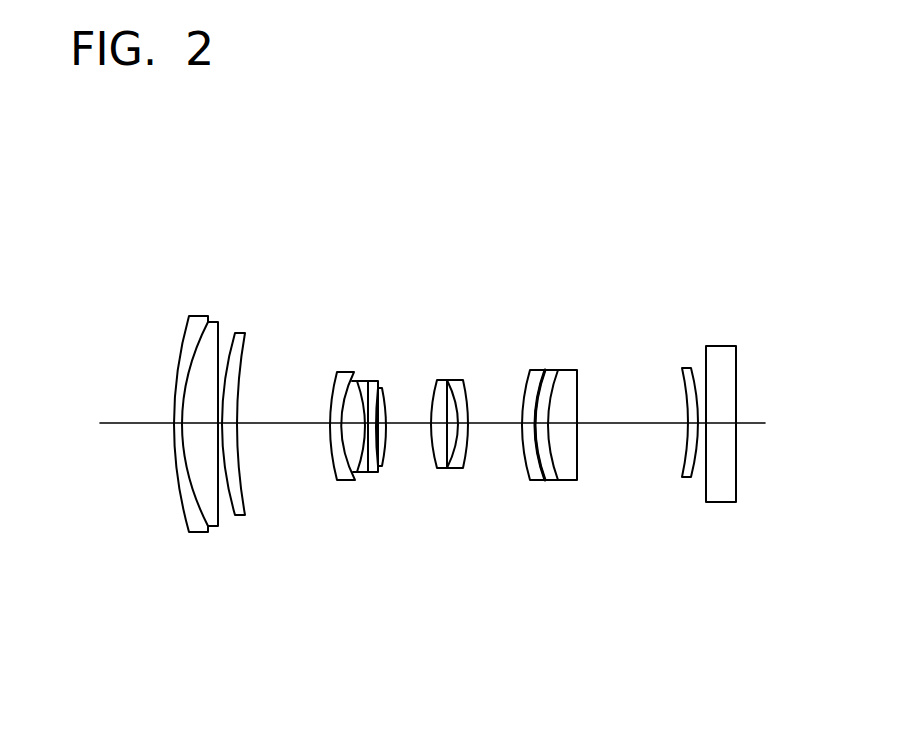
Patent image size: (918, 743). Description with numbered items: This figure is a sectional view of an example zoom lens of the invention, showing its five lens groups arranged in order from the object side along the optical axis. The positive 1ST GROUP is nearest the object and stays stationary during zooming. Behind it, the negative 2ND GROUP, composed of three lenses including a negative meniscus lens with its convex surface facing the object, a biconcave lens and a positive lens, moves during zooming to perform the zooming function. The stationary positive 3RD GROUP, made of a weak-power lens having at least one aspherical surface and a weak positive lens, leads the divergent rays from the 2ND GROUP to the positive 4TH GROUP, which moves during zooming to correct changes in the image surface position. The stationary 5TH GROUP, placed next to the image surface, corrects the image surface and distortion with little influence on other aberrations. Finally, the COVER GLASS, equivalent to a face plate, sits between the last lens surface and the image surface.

The first lens group 1ST GROUP is at (253, 568).
The second lens group 2ND GROUP is at (392, 511).
The third lens group 3RD GROUP is at (473, 504).
The fourth lens group 4TH GROUP is at (577, 504).
The fifth lens group 5TH GROUP is at (678, 502).
The cover glass COVER GLASS is at (737, 366).